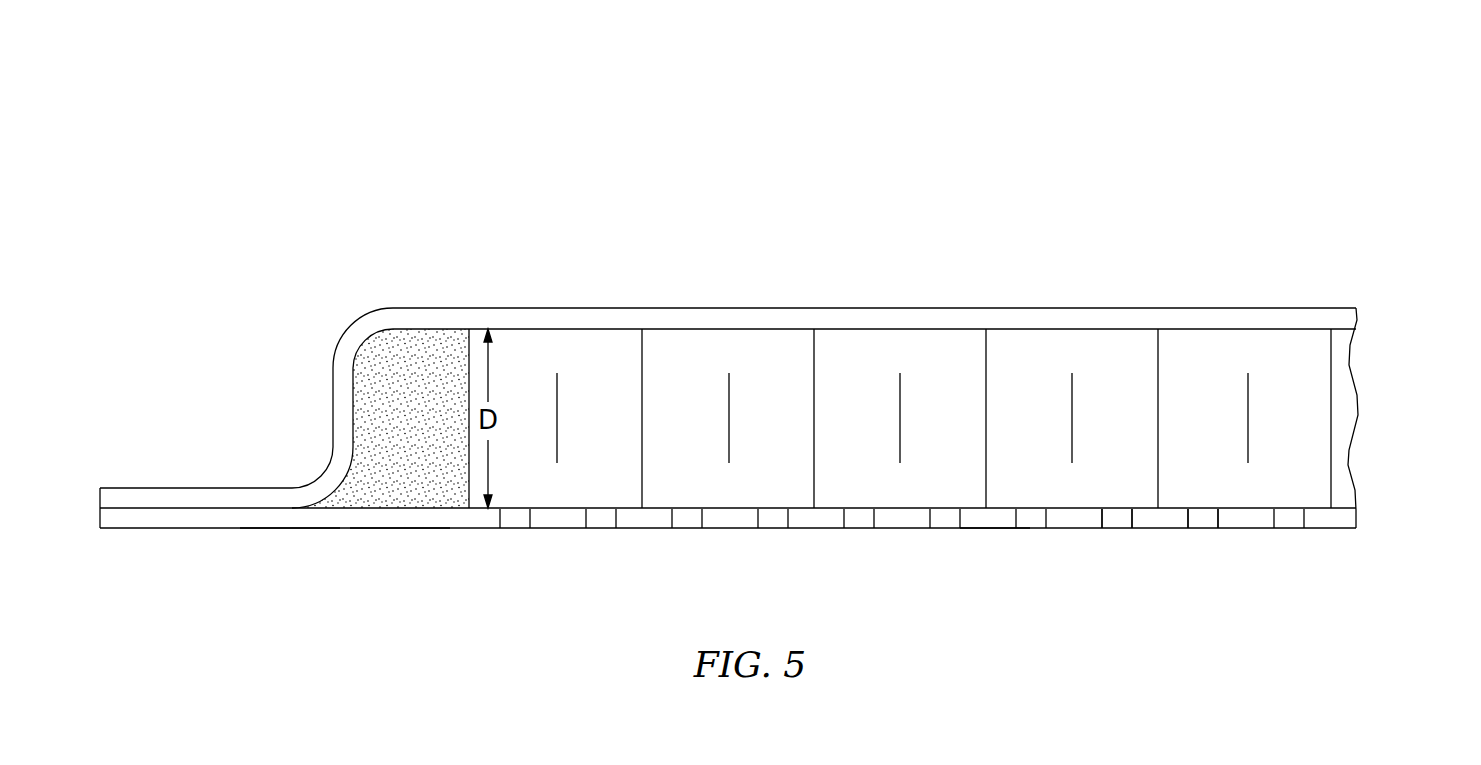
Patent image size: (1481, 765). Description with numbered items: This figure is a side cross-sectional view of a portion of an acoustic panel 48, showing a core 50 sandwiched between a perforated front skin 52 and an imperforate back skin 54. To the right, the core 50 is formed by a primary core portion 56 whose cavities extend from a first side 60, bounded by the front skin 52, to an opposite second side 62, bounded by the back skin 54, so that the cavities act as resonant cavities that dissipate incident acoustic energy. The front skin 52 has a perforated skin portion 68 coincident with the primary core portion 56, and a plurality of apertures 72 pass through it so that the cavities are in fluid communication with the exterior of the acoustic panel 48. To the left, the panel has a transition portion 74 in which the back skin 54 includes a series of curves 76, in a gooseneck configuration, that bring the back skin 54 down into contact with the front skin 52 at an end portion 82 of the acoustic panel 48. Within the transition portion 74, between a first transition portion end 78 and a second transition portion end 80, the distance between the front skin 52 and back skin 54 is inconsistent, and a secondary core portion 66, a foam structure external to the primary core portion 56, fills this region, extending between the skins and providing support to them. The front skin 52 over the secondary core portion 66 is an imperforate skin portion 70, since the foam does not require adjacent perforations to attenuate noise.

The acoustic panel 48 is at (1281, 201).
The core 50 is at (1372, 417).
The front skin 52 is at (462, 528).
The back skin 54 is at (1114, 318).
The primary core portion 56 is at (886, 481).
The first side 60 is at (738, 528).
The second side 62 is at (768, 328).
The secondary core portion 66 is at (428, 437).
The perforated skin portion 68 is at (992, 550).
The imperforate skin portion 70 is at (404, 539).
The apertures 72 is at (1118, 521).
The transition portion 74 is at (292, 349).
The curve 76 is at (349, 310).
The first transition portion end 78 is at (295, 540).
The second transition portion end 80 is at (475, 299).
The end portion 82 is at (213, 471).